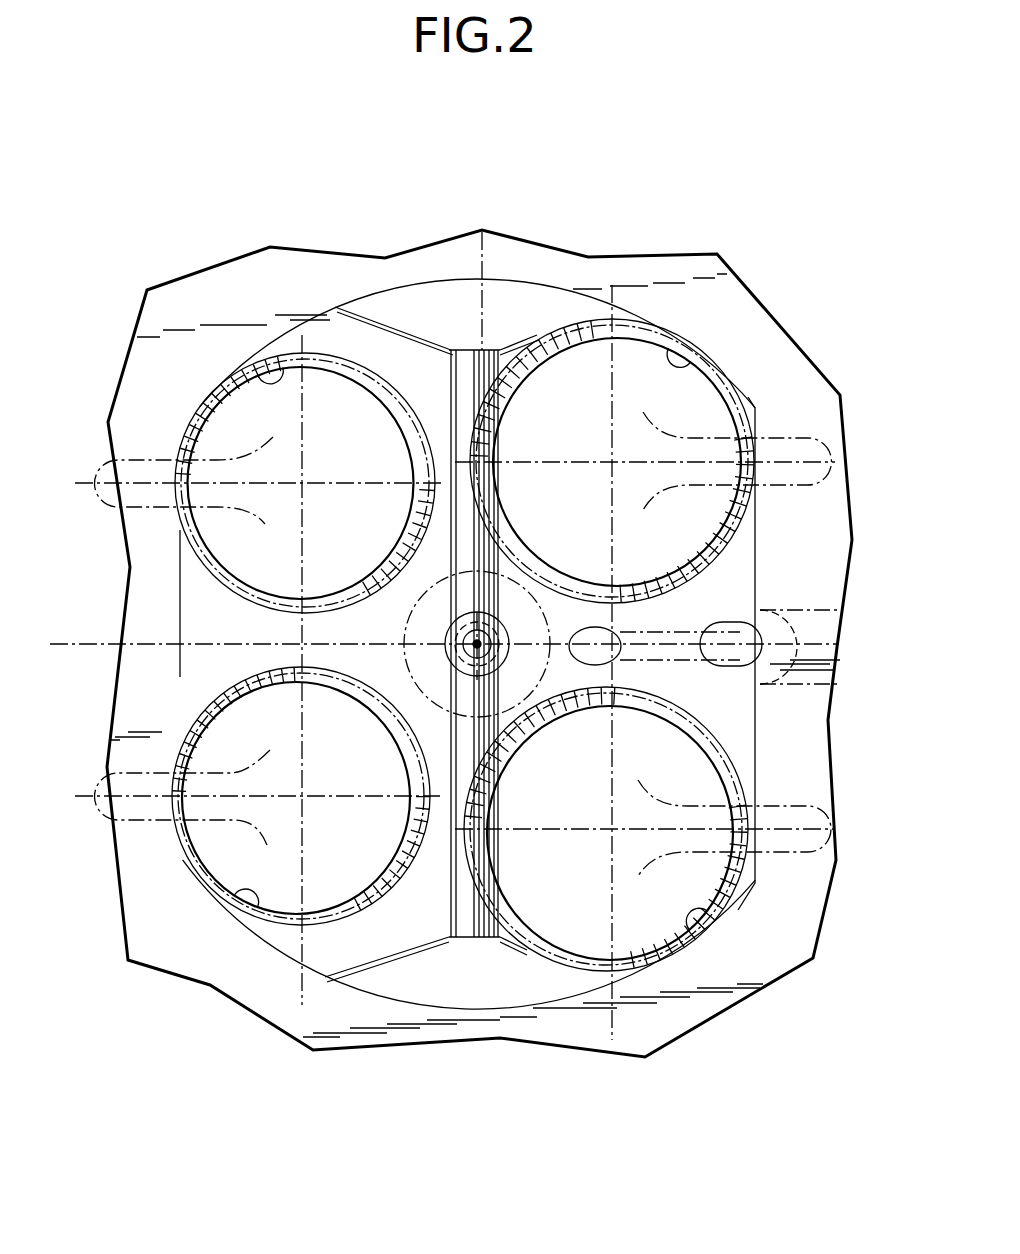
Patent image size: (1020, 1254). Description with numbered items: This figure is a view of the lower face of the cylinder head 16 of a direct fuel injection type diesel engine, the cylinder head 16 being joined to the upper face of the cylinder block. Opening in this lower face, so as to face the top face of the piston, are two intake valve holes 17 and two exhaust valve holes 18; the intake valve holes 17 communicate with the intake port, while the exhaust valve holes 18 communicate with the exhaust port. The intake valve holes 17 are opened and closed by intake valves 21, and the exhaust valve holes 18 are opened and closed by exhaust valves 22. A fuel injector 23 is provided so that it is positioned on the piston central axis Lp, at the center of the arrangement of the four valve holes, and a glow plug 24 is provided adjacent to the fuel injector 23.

The cylinder head 16 is at (749, 283).
The intake valve hole 17 is at (684, 358).
The exhaust valve hole 18 is at (266, 370).
The intake valve 21 is at (713, 440).
The exhaust valve 22 is at (213, 455).
The fuel injector 23 is at (448, 657).
The glow plug 24 is at (797, 610).
The piston central axis Lp is at (480, 642).